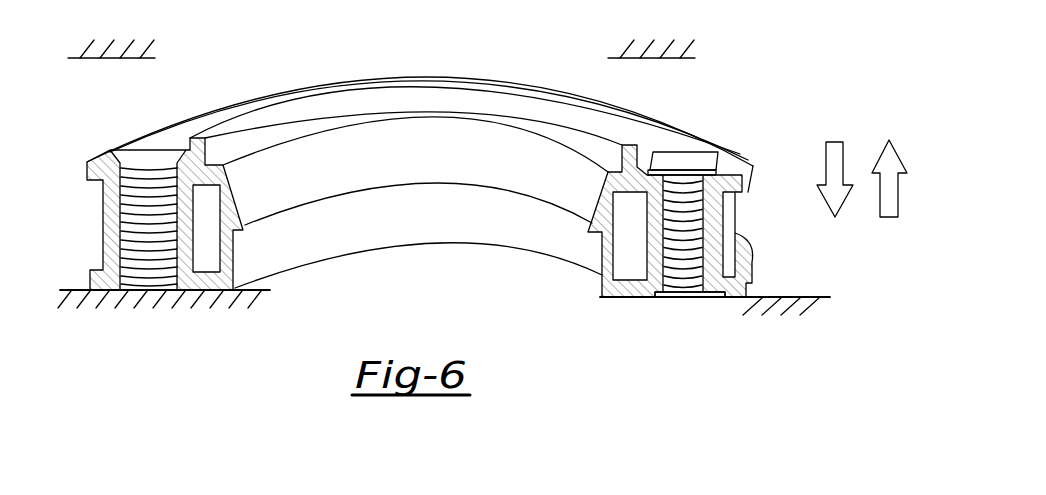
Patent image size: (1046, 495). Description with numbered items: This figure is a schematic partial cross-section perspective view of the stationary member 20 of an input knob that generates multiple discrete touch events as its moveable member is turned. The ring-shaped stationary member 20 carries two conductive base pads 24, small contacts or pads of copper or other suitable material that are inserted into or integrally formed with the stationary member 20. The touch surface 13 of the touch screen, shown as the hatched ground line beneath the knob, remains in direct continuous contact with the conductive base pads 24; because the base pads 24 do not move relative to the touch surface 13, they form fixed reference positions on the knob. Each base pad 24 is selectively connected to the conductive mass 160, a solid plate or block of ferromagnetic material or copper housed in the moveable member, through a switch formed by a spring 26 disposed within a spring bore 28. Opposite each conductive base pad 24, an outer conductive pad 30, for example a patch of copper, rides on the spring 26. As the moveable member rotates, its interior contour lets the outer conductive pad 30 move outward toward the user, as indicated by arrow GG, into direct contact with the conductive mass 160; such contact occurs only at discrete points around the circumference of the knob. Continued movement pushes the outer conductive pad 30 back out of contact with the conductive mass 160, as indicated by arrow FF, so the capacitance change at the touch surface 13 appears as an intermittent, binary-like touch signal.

The touch surface 13 is at (67, 283).
The stationary member 20 is at (776, 78).
The conductive base pads 24 is at (170, 290).
The spring 26 is at (683, 280).
The spring bore 28 is at (700, 210).
The outer conductive pad 30 is at (682, 163).
The conductive mass 160 is at (150, 47).
The arrow FF is at (835, 142).
The arrow GG is at (888, 217).